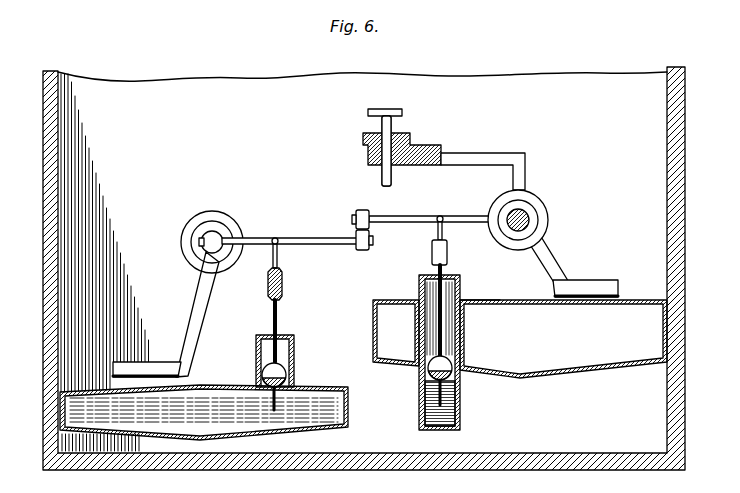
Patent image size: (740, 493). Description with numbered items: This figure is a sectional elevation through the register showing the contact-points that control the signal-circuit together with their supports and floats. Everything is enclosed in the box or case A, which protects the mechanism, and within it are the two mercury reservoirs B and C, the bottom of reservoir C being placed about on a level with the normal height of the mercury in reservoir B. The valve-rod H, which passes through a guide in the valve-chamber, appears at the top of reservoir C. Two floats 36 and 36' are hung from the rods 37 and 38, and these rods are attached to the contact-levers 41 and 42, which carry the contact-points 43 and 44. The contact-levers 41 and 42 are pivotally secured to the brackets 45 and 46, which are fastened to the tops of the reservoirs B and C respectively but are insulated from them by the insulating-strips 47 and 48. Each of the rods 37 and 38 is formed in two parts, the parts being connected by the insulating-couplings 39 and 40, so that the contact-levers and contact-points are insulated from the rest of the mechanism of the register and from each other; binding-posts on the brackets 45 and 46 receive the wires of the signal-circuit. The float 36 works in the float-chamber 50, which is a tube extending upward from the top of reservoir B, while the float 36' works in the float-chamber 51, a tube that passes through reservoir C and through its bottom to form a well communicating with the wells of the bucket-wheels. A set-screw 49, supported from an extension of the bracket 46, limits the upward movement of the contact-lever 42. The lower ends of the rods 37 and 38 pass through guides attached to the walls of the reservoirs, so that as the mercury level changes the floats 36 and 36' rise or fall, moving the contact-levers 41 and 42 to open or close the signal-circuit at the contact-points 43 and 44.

The box or case A is at (43, 203).
The reservoir B is at (213, 407).
The reservoir C is at (520, 339).
The valve-rod H is at (480, 290).
The float 36 is at (462, 380).
The float 36' is at (256, 385).
The rod 37 is at (280, 323).
The rod 38 is at (440, 287).
The insulating-coupling 39 is at (269, 287).
The insulating-coupling 40 is at (449, 253).
The contact-lever 41 is at (356, 230).
The contact-lever 42 is at (448, 206).
The contact-point 43 is at (364, 250).
The contact-point 44 is at (357, 214).
The bracket 45 is at (188, 301).
The bracket 46 is at (548, 252).
The insulating-strip 47 is at (183, 376).
The insulating-strip 48 is at (618, 296).
The set-screw 49 is at (372, 124).
The float-chamber 50 is at (292, 355).
The float-chamber 51 is at (428, 326).